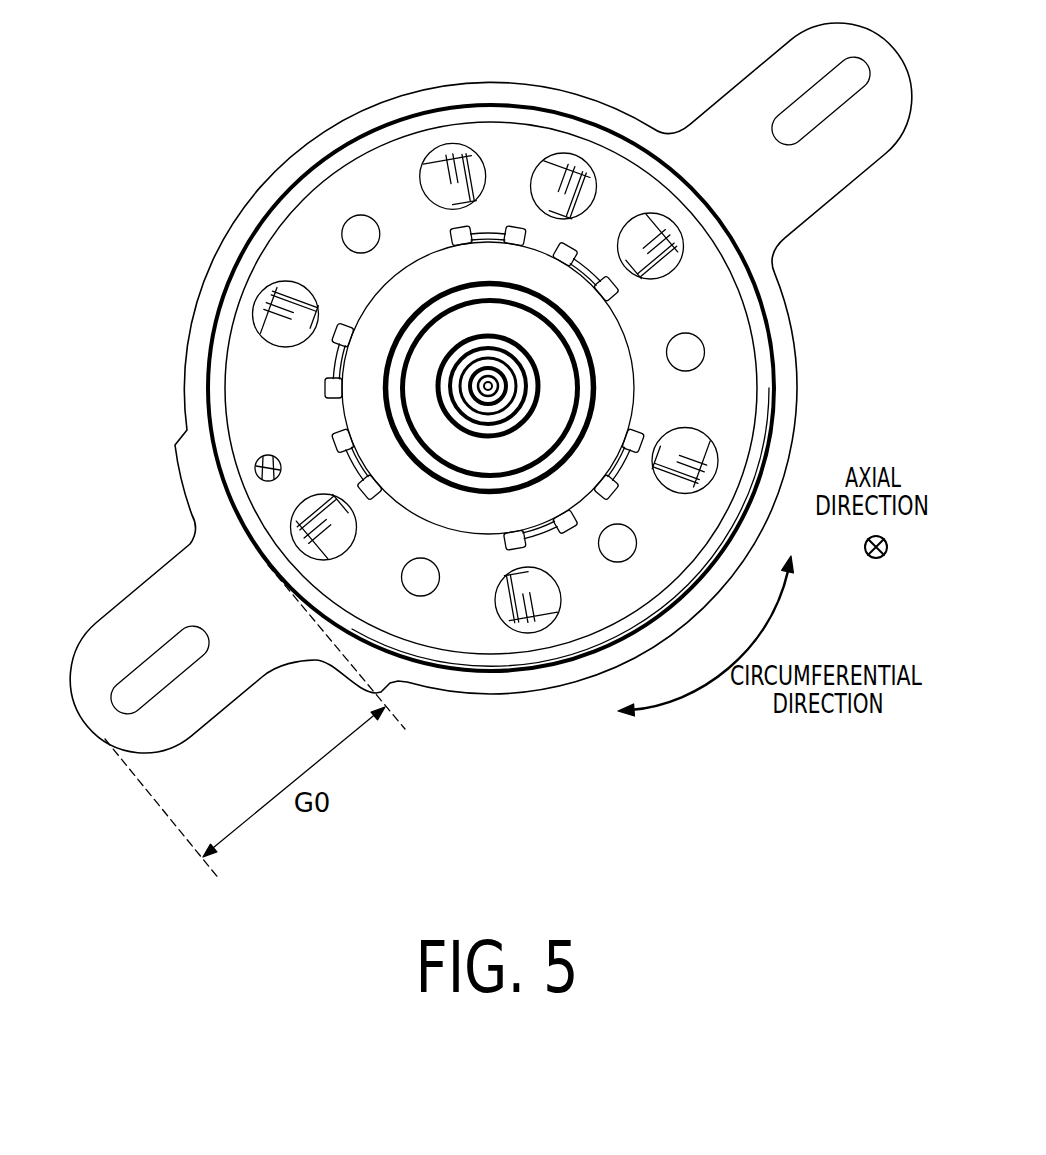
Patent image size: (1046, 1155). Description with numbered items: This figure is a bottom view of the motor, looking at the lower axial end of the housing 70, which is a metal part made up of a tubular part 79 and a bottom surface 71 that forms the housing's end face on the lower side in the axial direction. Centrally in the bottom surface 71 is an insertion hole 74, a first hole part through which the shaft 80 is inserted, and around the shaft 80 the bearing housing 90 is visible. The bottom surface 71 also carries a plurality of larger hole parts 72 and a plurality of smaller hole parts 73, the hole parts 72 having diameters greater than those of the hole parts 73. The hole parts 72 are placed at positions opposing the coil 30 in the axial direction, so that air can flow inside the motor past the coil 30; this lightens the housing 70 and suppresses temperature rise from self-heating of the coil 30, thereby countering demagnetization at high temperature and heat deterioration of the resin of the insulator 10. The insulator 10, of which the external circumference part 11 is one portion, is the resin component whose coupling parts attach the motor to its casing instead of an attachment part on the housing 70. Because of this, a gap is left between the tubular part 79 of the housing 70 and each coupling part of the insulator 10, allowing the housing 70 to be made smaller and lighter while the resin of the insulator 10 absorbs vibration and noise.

The insulator 10 is at (683, 128).
The external circumference part 11 is at (213, 250).
The coil 30 is at (448, 180).
The housing 70 is at (623, 190).
The bottom surface 71 is at (303, 242).
The hole part 72 is at (417, 177).
The hole part 73 is at (256, 474).
The insertion hole 74 is at (636, 393).
The tubular part 79 is at (203, 383).
The shaft 80 is at (481, 392).
The bearing housing 90 is at (583, 337).